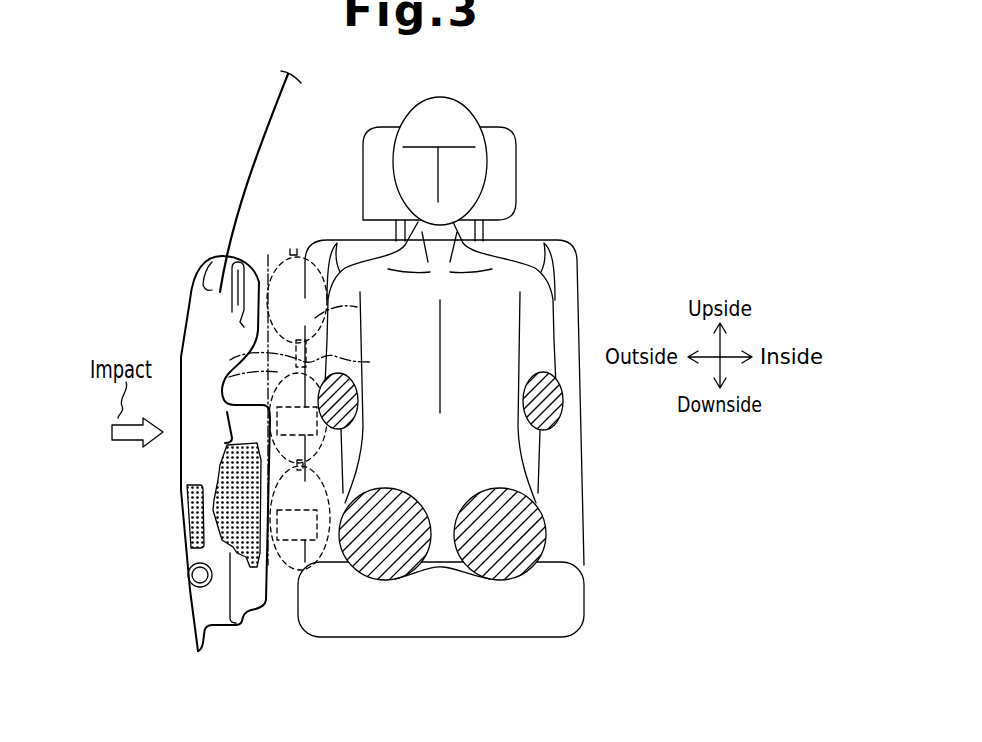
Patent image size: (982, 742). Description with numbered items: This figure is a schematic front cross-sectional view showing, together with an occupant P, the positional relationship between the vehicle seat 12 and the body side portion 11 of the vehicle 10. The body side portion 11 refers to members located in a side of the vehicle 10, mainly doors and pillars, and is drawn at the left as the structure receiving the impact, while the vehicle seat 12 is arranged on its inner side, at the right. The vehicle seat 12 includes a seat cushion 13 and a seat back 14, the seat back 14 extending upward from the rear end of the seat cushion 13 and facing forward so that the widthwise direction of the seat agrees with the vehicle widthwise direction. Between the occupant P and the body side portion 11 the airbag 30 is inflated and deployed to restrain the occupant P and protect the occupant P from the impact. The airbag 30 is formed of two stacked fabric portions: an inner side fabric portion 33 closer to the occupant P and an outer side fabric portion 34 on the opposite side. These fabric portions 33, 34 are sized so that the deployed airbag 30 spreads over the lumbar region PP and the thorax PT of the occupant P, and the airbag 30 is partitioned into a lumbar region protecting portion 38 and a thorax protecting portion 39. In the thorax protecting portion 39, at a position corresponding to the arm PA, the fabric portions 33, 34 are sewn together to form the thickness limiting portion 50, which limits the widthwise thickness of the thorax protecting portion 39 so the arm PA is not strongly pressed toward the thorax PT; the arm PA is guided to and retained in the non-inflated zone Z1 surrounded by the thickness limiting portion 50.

The vehicle 10 is at (160, 615).
The body side portion 11 is at (180, 478).
The vehicle seat 12 is at (634, 554).
The seat cushion 13 is at (574, 599).
The seat back 14 is at (574, 511).
The airbag 30 is at (302, 188).
The inner side fabric portion 33 is at (322, 243).
The outer side fabric portion 34 is at (281, 260).
The lumbar region protecting portion 38 is at (297, 525).
The thorax protecting portion 39 is at (297, 421).
The thickness limiting portion 50 is at (229, 366).
The occupant P is at (498, 97).
The thorax PT is at (320, 313).
The lumbar region PP is at (330, 490).
The arm PA is at (347, 334).
The non-inflated zone Z1 is at (407, 380).